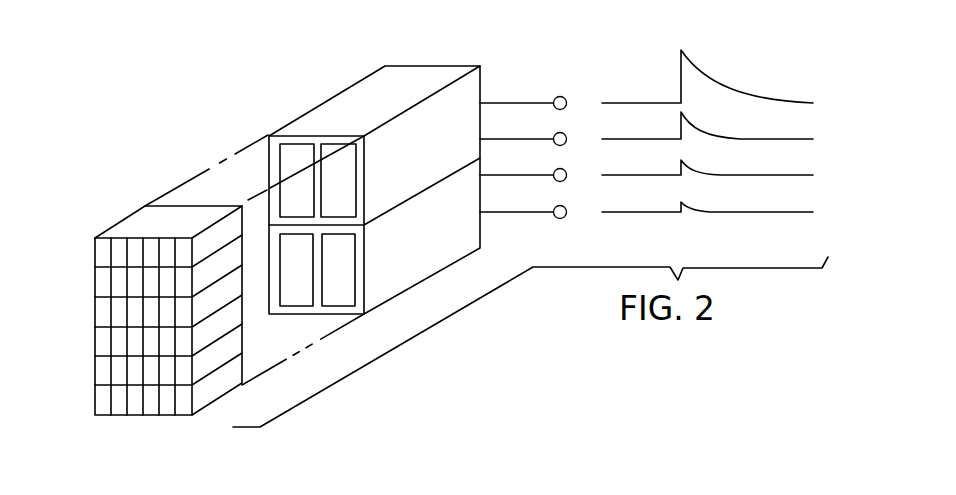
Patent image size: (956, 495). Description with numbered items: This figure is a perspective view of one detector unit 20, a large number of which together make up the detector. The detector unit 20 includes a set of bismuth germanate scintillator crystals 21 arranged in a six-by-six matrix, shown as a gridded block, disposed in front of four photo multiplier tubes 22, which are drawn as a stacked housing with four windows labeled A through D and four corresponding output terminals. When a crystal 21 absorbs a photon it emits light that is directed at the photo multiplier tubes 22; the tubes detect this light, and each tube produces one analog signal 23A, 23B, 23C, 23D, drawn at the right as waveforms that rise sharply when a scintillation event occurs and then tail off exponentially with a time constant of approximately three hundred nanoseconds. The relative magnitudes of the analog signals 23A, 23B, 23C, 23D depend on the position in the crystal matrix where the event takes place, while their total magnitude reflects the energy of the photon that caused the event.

The detector unit 20 is at (356, 216).
The bismuth germanate (BGO) scintillator crystals 21 is at (93, 267).
The photo multiplier tubes (PMTs) 22 is at (432, 172).
The analog signal 23A is at (718, 81).
The analog signal 23B is at (698, 121).
The analog signal 23C is at (692, 166).
The analog signal 23D is at (687, 206).